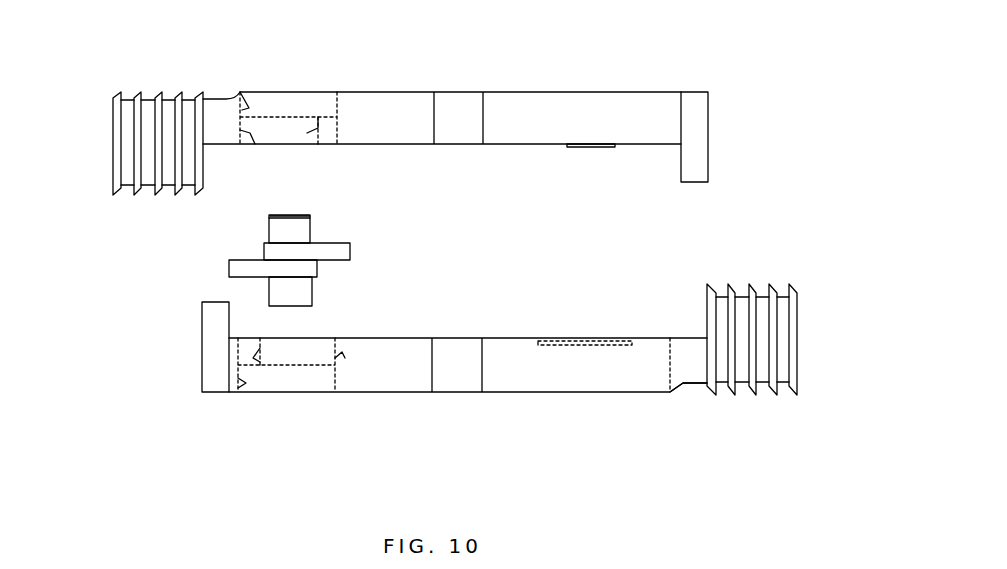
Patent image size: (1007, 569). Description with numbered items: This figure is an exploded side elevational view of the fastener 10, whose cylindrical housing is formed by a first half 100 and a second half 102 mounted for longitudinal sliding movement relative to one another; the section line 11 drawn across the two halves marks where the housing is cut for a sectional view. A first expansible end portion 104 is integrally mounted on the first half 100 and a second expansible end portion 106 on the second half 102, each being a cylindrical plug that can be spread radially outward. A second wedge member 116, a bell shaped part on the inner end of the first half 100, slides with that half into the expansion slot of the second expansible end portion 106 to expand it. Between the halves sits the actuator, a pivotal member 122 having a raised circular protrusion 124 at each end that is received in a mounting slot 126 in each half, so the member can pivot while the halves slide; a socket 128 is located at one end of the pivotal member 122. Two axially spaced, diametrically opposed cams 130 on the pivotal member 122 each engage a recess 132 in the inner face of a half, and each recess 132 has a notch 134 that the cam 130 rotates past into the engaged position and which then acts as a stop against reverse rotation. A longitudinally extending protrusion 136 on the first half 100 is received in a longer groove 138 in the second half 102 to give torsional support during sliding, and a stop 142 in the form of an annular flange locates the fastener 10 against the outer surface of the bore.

The fastener 10 is at (158, 372).
The section line 11 is at (110, 277).
The first half of the housing 100 is at (578, 110).
The second half of the housing 102 is at (507, 376).
The first expansible end portion 104 is at (128, 135).
The second expansible end portion 106 is at (782, 338).
The second wedge member 116 is at (692, 130).
The pivotal member 122 is at (305, 256).
The raised circular protrusion 124 is at (365, 214).
The mounting slot 126 is at (240, 92).
The socket 128 is at (275, 216).
The cam 130 is at (248, 272).
The recess 132 is at (251, 135).
The notch 134 is at (307, 133).
The longitudinally extending protrusion 136 is at (567, 147).
The longitudinally extending groove 138 is at (577, 340).
The stop 142 is at (707, 387).